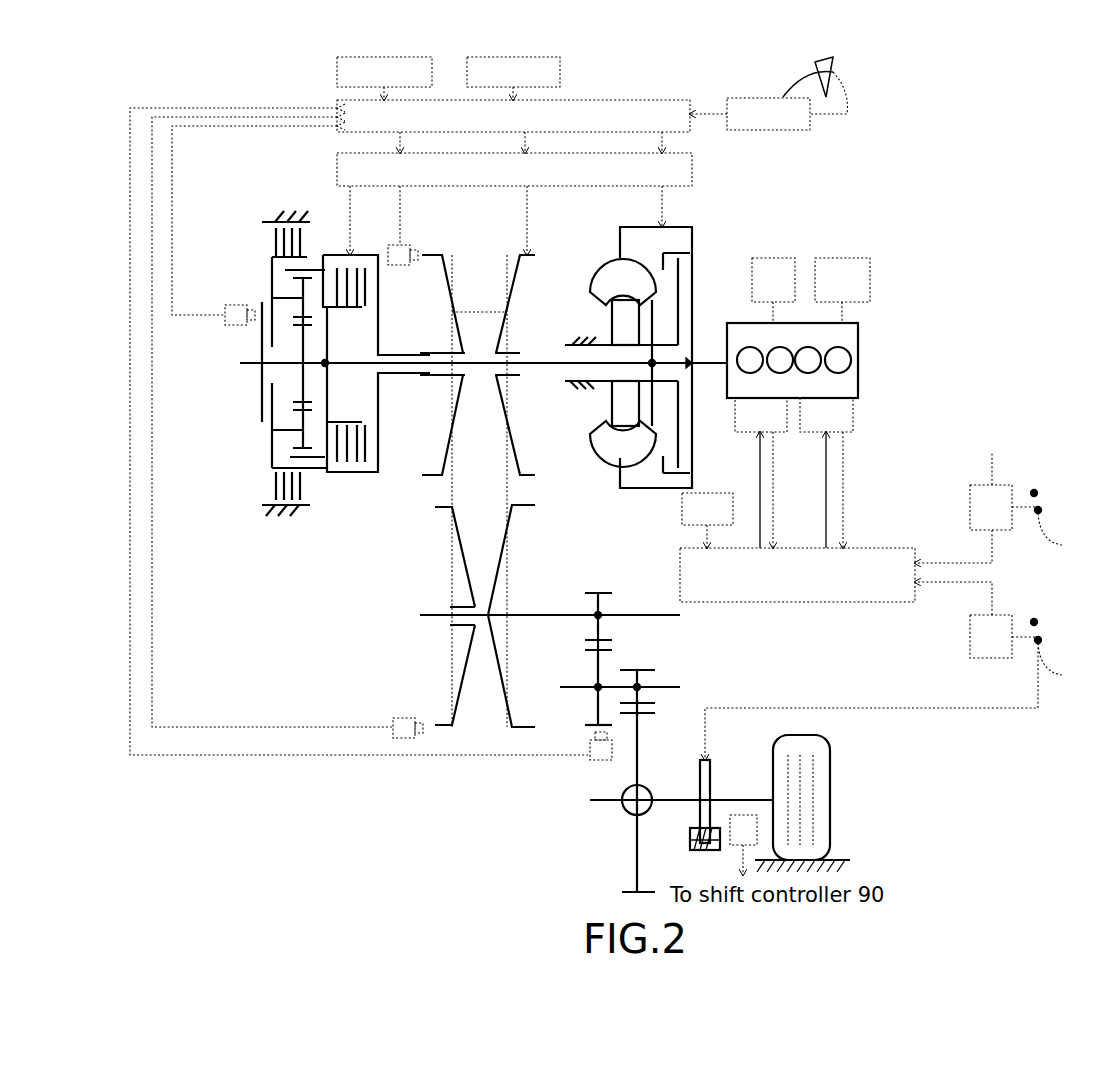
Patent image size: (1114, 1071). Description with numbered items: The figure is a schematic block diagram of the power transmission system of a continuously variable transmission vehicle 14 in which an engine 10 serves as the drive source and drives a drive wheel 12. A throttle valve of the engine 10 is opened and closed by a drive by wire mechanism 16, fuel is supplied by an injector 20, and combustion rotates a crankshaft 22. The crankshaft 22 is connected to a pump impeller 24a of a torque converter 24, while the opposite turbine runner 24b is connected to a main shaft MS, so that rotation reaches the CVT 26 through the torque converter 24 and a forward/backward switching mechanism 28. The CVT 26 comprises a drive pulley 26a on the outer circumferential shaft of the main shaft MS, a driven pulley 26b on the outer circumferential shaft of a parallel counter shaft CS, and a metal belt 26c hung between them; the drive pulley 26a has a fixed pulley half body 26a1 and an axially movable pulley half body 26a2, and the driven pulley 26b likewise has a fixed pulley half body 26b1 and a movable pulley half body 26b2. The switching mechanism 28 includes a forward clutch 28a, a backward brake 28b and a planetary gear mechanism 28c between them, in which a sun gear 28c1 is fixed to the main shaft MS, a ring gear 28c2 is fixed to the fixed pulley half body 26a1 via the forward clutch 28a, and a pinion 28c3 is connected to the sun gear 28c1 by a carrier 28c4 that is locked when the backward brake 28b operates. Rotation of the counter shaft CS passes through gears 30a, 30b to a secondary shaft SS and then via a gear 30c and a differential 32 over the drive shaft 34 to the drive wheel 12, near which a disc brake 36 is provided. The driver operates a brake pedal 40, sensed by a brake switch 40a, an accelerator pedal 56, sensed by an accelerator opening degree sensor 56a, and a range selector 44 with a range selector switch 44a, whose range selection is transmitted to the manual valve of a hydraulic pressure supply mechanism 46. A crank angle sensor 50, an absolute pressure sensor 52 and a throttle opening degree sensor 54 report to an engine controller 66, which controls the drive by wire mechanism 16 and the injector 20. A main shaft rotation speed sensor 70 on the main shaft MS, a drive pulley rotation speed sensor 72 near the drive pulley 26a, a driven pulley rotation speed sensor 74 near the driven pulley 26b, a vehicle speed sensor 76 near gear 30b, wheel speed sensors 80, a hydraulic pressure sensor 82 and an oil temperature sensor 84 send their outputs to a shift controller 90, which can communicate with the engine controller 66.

The engine 10 is at (858, 398).
The drive wheel 12 is at (830, 750).
The continuously variable transmission vehicle 14 is at (975, 140).
The drive by wire (DBW) mechanism 16 is at (745, 434).
The injector 20 is at (812, 434).
The crankshaft 22 is at (706, 368).
The torque converter 24 is at (620, 357).
The pump impeller 24a is at (598, 260).
The turbine runner 24b is at (640, 480).
The CVT 26 is at (522, 479).
The drive pulley 26a is at (501, 353).
The fixed pulley half body 26a1 is at (443, 262).
The movable pulley half body 26a2 is at (518, 285).
The driven pulley 26b is at (522, 616).
The fixed pulley half body 26b1 is at (520, 510).
The movable pulley half body 26b2 is at (448, 512).
The belt 26c is at (450, 488).
The forward/backward switching mechanism 28 is at (456, 358).
The forward clutch 28a is at (338, 312).
The backward brake 28b is at (275, 238).
The planetary gear mechanism 28c is at (292, 347).
The sun gear 28c1 is at (298, 385).
The ring gear 28c2 is at (350, 478).
The pinion 28c3 is at (274, 434).
The carrier 28c4 is at (263, 460).
The gear 30a is at (602, 594).
The gear 30b is at (592, 722).
The gear 30c is at (640, 672).
The differential 32 is at (625, 812).
The drive shaft 34 is at (745, 800).
The disc brake 36 is at (690, 835).
The brake pedal 40 is at (1062, 675).
The brake switch 40a is at (1000, 615).
The range selector 44 is at (835, 60).
The range selector switch 44a is at (770, 99).
The hydraulic pressure supply mechanism 46 is at (692, 166).
The crank angle sensor 50 is at (772, 258).
The absolute pressure sensor 52 is at (845, 258).
The throttle opening degree sensor 54 is at (682, 505).
The accelerator pedal 56 is at (1062, 545).
The accelerator opening degree sensor 56a is at (963, 496).
The engine controller 66 is at (855, 602).
The NT sensor 70 is at (228, 306).
The NDR sensor 72 is at (388, 250).
The NDN sensor 74 is at (393, 722).
The V sensor 76 is at (596, 762).
The wheel speed sensor 80 is at (735, 845).
The hydraulic pressure sensor 82 is at (384, 78).
The oil temperature sensor 84 is at (513, 78).
The shift controller 90 is at (625, 101).
The main shaft MS is at (518, 374).
The counter shaft CS is at (510, 620).
The secondary shaft SS is at (668, 690).